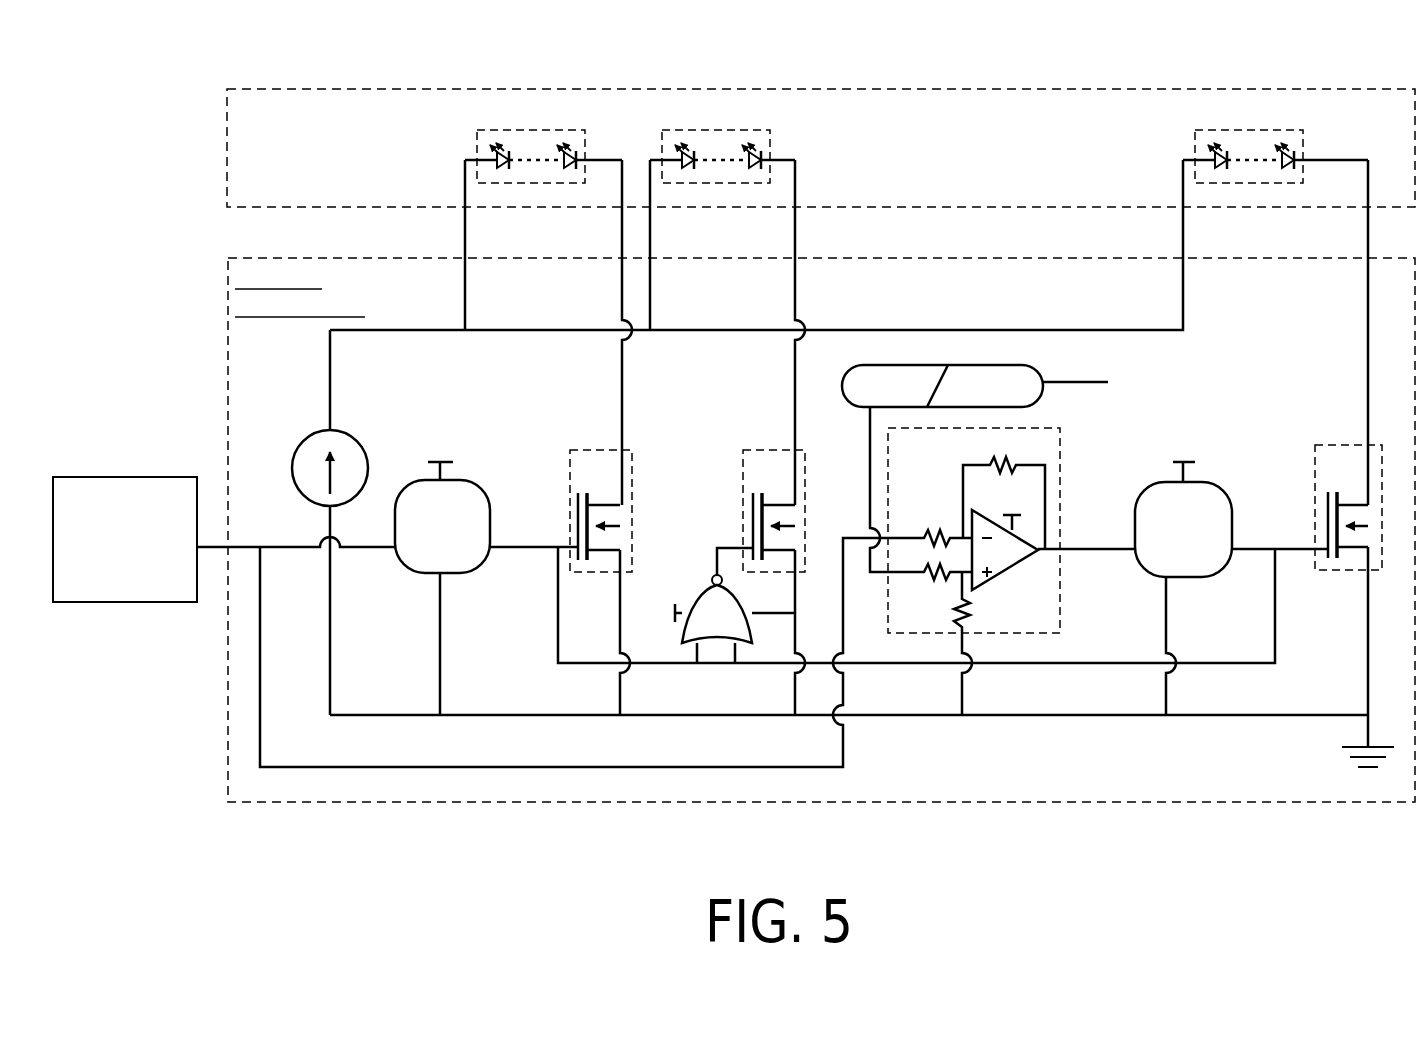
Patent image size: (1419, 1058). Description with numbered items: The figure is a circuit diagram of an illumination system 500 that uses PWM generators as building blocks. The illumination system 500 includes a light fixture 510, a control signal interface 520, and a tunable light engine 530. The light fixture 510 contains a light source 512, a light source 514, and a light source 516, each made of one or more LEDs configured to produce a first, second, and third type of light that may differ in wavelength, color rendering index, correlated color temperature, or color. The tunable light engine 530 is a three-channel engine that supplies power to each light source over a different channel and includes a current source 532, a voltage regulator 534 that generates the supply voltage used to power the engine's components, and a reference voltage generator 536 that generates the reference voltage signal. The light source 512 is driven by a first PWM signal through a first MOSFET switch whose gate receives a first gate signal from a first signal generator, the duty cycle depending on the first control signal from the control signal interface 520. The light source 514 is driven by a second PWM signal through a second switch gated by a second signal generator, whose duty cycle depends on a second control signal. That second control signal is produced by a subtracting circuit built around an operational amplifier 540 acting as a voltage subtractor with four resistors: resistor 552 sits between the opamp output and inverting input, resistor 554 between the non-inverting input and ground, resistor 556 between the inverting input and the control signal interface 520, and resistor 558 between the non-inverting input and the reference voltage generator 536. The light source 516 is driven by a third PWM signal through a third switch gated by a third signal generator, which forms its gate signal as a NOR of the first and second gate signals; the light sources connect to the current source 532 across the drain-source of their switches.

The illumination system 500 is at (130, 308).
The light fixture 510 is at (242, 89).
The light source 512 is at (489, 130).
The light source 514 is at (1233, 130).
The light source 516 is at (654, 130).
The control signal interface 520 is at (184, 477).
The tunable light engine 530 is at (242, 258).
The current source 532 is at (336, 432).
The voltage regulator 534 is at (969, 365).
The reference voltage generator 536 is at (860, 365).
The operational amplifier 540 is at (988, 587).
The resistor 552 is at (1016, 466).
The resistor 554 is at (985, 632).
The resistor 556 is at (946, 532).
The resistor 558 is at (946, 580).